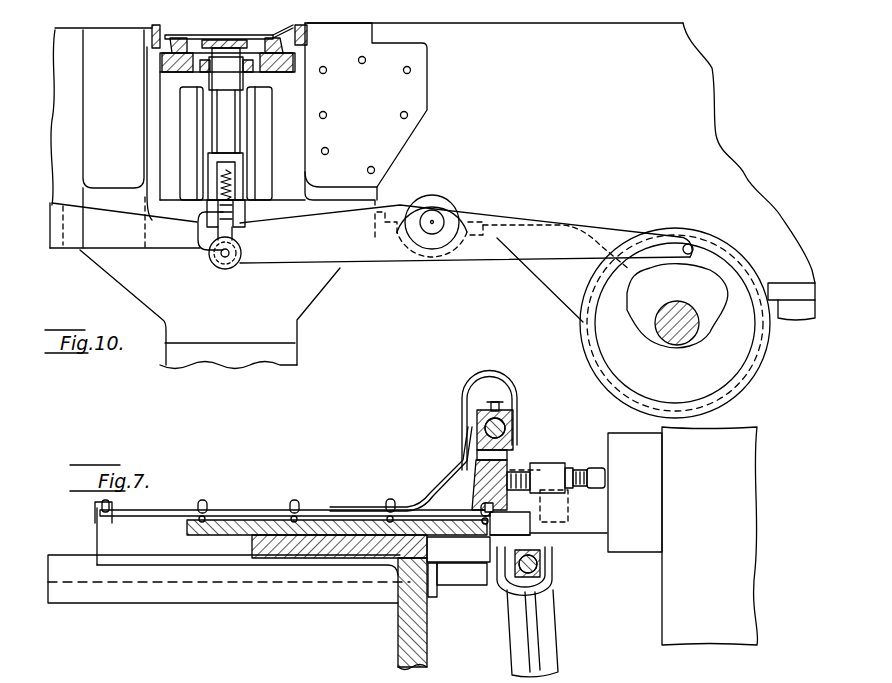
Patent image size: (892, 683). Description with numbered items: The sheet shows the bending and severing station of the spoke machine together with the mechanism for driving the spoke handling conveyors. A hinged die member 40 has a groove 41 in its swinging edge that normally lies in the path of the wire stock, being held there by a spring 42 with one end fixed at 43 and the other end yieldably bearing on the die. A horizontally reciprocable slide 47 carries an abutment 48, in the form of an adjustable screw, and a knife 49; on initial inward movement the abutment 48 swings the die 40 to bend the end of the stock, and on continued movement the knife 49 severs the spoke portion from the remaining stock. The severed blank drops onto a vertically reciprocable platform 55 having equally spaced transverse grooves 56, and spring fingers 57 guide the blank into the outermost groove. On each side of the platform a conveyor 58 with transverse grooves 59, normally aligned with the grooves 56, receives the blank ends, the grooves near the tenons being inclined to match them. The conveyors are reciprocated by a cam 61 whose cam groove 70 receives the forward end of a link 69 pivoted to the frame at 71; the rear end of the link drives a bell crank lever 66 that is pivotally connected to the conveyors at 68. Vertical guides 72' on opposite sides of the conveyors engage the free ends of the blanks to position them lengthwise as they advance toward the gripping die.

In FIG. 7, the hinged die member 40 is at (521, 475).
In FIG. 7, the groove 41 is at (556, 478).
In FIG. 7, the spring 42 is at (506, 407).
In FIG. 7, the fixed end of spring 43 is at (519, 423).
In FIG. 7, the horizontally reciprocable slide 47 is at (598, 540).
In FIG. 7, the abutment 48 is at (512, 462).
In FIG. 7, the knife 49 is at (503, 553).
In FIG. 10, the vertically reciprocable platform 55 is at (229, 55).
In FIG. 7, the vertically reciprocable platform 55 is at (332, 528).
In FIG. 7, the transverse grooves 56 is at (300, 520).
In FIG. 7, the spring fingers 57 is at (377, 505).
In FIG. 10, the conveyors 58 is at (158, 77).
In FIG. 7, the conveyors 58 is at (100, 537).
In FIG. 10, the transverse grooves of conveyor 59 is at (175, 38).
In FIG. 7, the transverse grooves of conveyor 59 is at (105, 512).
In FIG. 10, the cam 61 is at (755, 352).
In FIG. 10, the bell crank lever 66 is at (217, 139).
In FIG. 7, the bell crank lever 66 is at (550, 652).
In FIG. 7, the pivotal connection to conveyors 68 is at (547, 580).
In FIG. 10, the link 69 is at (380, 257).
In FIG. 10, the cam groove 70 is at (702, 311).
In FIG. 10, the pivotal connection of link 71 is at (432, 222).
In FIG. 10, the vertical guides 72' is at (327, 43).